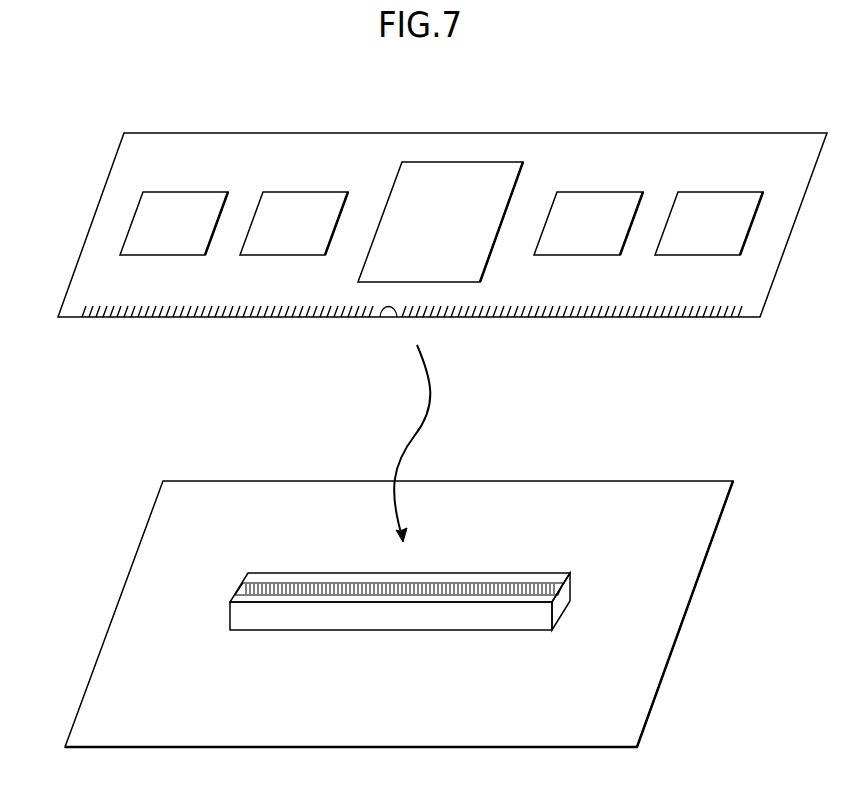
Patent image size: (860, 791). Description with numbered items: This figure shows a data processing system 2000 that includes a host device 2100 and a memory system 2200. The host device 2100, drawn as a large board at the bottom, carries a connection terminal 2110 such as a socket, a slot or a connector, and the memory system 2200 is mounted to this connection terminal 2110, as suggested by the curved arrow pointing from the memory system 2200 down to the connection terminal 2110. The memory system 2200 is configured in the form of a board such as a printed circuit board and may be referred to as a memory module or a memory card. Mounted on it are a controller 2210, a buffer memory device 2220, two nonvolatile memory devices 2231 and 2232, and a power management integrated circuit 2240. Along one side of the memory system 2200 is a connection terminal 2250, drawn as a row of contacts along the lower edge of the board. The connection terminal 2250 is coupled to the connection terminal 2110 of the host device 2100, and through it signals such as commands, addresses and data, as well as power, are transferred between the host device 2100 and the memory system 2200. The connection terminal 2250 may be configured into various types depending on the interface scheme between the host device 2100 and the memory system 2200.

The data processing system 2000 is at (98, 93).
The memory system 2200 is at (442, 225).
The connection terminal 2250 is at (110, 305).
The power management integrated circuit 2240 is at (174, 223).
The buffer memory device 2220 is at (294, 223).
The controller 2210 is at (440, 222).
The nonvolatile memory device 2231 is at (588, 223).
The nonvolatile memory device 2232 is at (709, 223).
The host device 2100 is at (399, 614).
The connection terminal 2110 is at (596, 567).